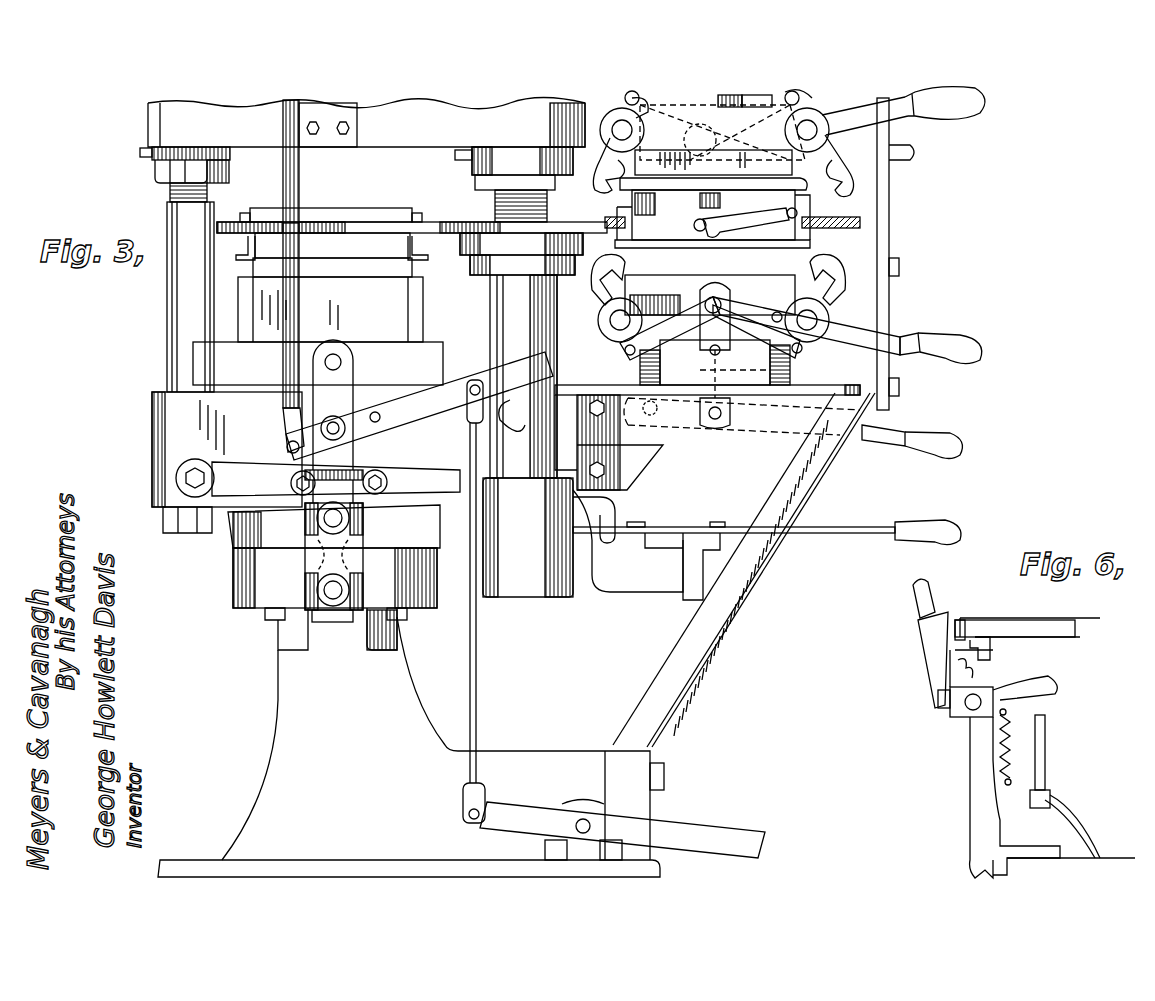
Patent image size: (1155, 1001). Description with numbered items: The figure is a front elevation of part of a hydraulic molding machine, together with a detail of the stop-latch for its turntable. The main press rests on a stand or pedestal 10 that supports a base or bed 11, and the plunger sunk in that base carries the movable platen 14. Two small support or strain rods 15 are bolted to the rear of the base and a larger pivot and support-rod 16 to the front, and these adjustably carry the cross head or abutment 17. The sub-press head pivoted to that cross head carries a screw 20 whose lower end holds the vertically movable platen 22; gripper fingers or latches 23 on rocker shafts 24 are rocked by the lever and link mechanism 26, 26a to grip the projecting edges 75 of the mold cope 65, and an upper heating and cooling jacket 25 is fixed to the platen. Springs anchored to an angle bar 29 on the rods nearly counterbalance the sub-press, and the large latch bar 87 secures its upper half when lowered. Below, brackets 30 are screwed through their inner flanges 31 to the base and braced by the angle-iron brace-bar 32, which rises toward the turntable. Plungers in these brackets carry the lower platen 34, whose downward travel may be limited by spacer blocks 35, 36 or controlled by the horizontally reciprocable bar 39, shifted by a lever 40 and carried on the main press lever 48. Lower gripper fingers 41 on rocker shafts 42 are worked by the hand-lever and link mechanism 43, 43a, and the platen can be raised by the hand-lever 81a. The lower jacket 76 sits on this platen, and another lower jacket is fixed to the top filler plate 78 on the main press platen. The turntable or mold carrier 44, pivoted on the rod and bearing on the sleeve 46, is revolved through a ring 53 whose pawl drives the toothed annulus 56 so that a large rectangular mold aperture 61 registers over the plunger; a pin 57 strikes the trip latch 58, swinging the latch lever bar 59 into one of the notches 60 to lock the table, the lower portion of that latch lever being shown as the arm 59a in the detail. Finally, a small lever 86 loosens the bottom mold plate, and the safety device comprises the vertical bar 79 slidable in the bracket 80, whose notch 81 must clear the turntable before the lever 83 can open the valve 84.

In FIG. 3, the stand or pedestal 10 is at (305, 672).
In FIG. 3, the base or bed 11 is at (250, 577).
In FIG. 3, the movable platen 14 is at (432, 355).
In FIG. 3, the support or strain rods 15 is at (178, 258).
In FIG. 3, the pivot and support-rod 16 is at (498, 206).
In FIG. 3, the cross head or abutment 17 is at (262, 135).
In FIG. 3, the screw 20 is at (745, 100).
In FIG. 3, the vertically movable platen 22 is at (722, 132).
In FIG. 3, the gripper fingers or latches 23 is at (611, 142).
In FIG. 3, the rocker shafts 24 is at (618, 128).
In FIG. 3, the upper heating and cooling jacket 25 is at (713, 162).
In FIG. 3, the lever mechanism 26 is at (970, 112).
In FIG. 3, the link mechanism 26a is at (620, 110).
In FIG. 3, the angle bar 29 is at (839, 166).
In FIG. 3, the brackets 30 is at (735, 437).
In FIG. 6, the brackets 30 is at (1100, 858).
In FIG. 3, the inner flanges 31 is at (618, 487).
In FIG. 3, the angle-iron brace-bar 32 is at (722, 632).
In FIG. 3, the platen 34 is at (650, 300).
In FIG. 3, the spacer block 35 is at (640, 365).
In FIG. 3, the spacer block 36 is at (675, 396).
In FIG. 3, the horizontally reciprocable bar 39 is at (728, 535).
In FIG. 3, the lever 40 is at (905, 522).
In FIG. 3, the lower gripper fingers 41 is at (840, 290).
In FIG. 3, the rocker shafts 42 is at (618, 322).
In FIG. 3, the hand-lever mechanism 43 is at (948, 345).
In FIG. 3, the link mechanism 43a is at (738, 298).
In FIG. 3, the turntable or mold carrier 44 is at (437, 224).
In FIG. 6, the turntable or mold carrier 44 is at (1075, 625).
In FIG. 3, the sleeve 46 is at (523, 376).
In FIG. 3, the main press lever 48 is at (610, 585).
In FIG. 3, the ring 53 is at (462, 240).
In FIG. 3, the annulus 56 is at (475, 268).
In FIG. 6, the downwardly projecting pin 57 is at (992, 655).
In FIG. 6, the trip latch 58 is at (955, 645).
In FIG. 6, the latch lever bar 59 is at (915, 605).
In FIG. 6, the arm 59a is at (985, 806).
In FIG. 6, the notches 60 is at (962, 618).
In FIG. 3, the large rectangular mold aperture 61 is at (826, 217).
In FIG. 3, the mold cope 65 is at (678, 188).
In FIG. 3, the projecting edges 75 is at (802, 182).
In FIG. 3, the lower heating and cooling jacket 76 is at (258, 273).
In FIG. 3, the top filler plate 78 is at (422, 318).
In FIG. 3, the vertical bar 79 is at (296, 158).
In FIG. 3, the bracket 80 is at (328, 138).
In FIG. 3, the notch 81 is at (302, 221).
In FIG. 3, the hand-lever 81a is at (885, 430).
In FIG. 3, the valve lever 83 is at (282, 442).
In FIG. 3, the valve 84 is at (362, 560).
In FIG. 3, the small lever 86 is at (722, 220).
In FIG. 3, the large latch bar 87 is at (889, 182).